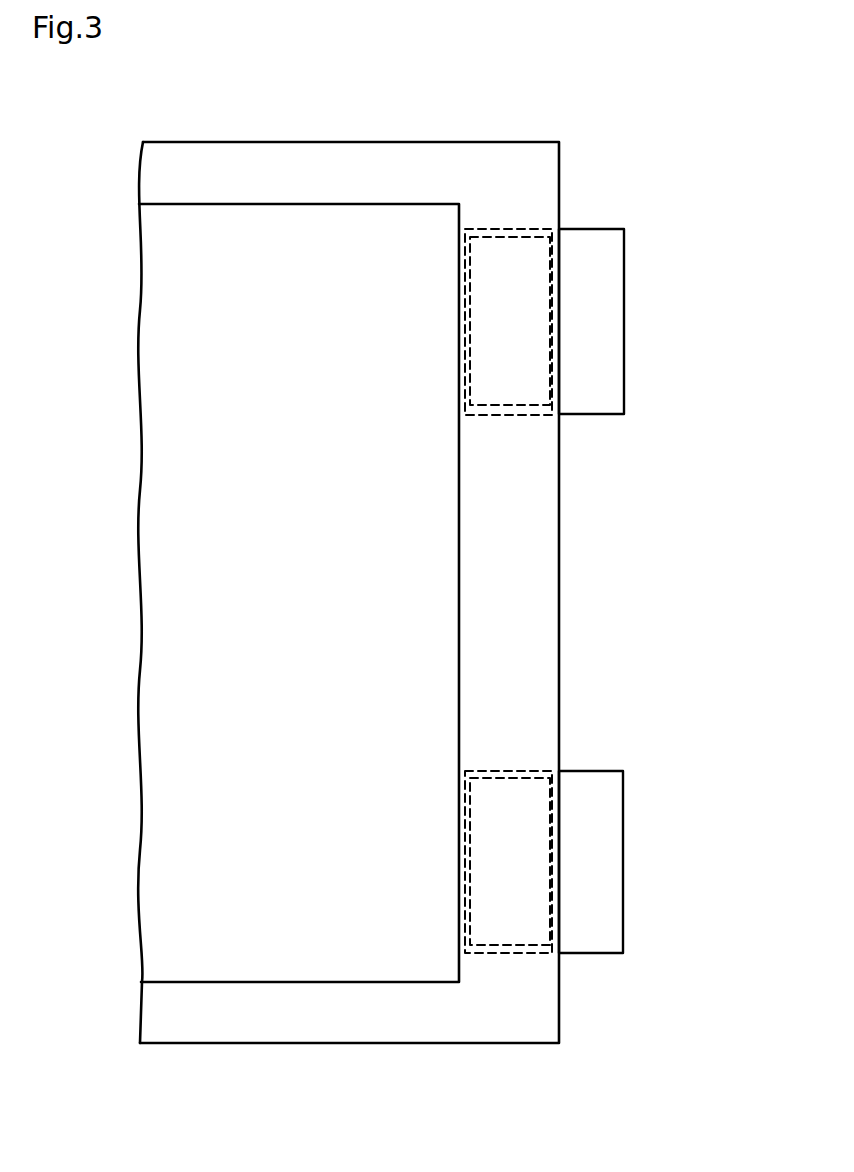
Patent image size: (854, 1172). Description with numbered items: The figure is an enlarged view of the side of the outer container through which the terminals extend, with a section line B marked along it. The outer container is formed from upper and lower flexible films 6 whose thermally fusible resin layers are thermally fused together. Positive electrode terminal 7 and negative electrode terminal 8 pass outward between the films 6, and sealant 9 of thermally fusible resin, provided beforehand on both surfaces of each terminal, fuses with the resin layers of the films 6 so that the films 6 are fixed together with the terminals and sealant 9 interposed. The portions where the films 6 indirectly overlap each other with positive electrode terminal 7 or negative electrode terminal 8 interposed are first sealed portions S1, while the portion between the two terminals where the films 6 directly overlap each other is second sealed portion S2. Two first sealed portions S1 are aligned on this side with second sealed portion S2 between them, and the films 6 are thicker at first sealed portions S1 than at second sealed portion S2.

The flexible film 6 is at (277, 172).
The positive electrode terminal 7 is at (593, 790).
The negative electrode terminal 8 is at (597, 235).
The sealant 9 is at (503, 250).
The first sealed portion S1 is at (518, 323).
The second sealed portion S2 is at (537, 612).
The section line B- B is at (506, 135).